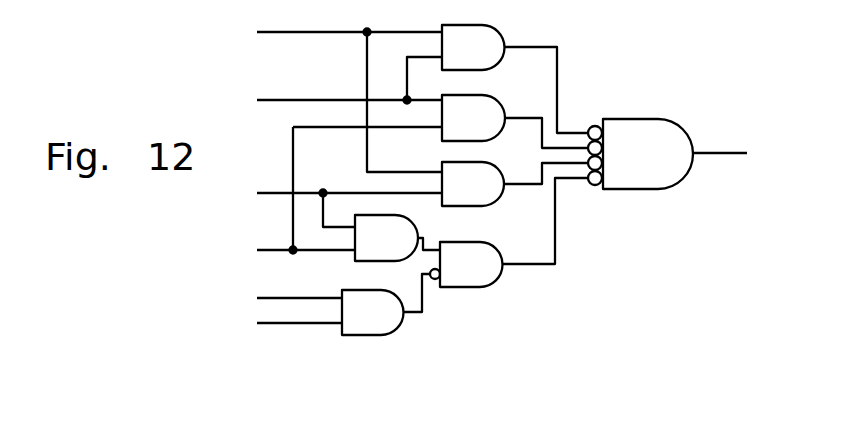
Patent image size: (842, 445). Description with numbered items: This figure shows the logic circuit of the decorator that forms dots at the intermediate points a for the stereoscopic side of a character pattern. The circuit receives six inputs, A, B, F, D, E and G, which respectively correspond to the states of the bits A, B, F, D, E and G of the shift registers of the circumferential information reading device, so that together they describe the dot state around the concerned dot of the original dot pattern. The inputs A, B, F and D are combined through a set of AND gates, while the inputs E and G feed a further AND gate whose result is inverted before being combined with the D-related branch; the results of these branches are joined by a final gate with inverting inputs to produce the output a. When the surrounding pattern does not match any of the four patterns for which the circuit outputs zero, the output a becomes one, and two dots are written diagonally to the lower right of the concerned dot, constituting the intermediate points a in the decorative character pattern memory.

The bit A of the shift registers A is at (336, 96).
The bit B of the shift registers B is at (336, 83).
The bit D of the shift registers D is at (293, 249).
The bit E of the shift registers E is at (286, 297).
The bit F of the shift registers F is at (336, 204).
The bit G of the shift registers G is at (286, 322).
The intermediate points a is at (729, 153).